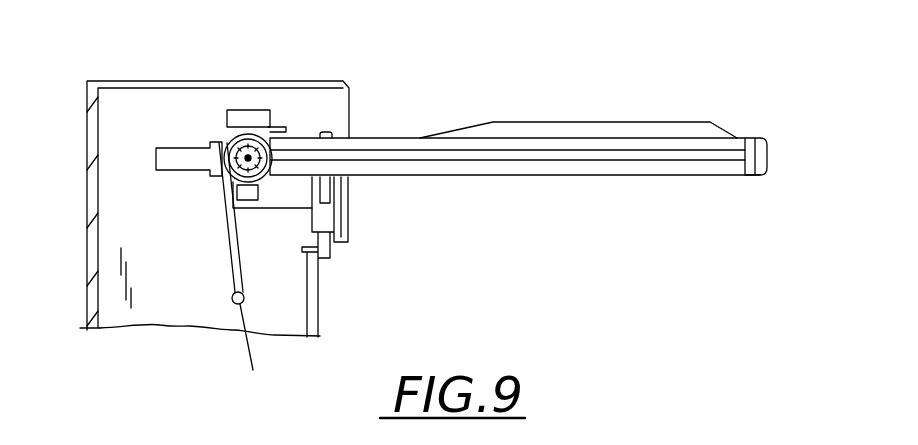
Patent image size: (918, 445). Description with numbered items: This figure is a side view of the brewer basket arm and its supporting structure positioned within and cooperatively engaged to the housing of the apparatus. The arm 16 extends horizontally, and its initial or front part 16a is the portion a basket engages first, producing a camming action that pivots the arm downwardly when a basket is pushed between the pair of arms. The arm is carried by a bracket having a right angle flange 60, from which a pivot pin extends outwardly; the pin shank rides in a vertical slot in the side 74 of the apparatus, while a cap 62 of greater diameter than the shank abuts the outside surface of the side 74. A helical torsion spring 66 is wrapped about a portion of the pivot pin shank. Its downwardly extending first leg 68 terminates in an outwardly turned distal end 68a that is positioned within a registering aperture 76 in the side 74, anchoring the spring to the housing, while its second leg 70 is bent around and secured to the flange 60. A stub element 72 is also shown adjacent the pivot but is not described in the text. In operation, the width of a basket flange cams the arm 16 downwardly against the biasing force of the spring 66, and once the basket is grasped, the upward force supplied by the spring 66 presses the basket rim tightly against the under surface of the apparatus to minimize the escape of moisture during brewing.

The arm 16 is at (770, 150).
The front part of the arm 16a is at (690, 132).
The right angle flange 60 is at (260, 110).
The cap 62 is at (227, 140).
The helical torsion spring 66 is at (237, 110).
The first leg 68 is at (233, 270).
The outwardly turned distal end 68a is at (232, 298).
The second leg 70 is at (280, 127).
The stub shaft 72 is at (180, 163).
The side 74 is at (122, 262).
The aperture 76 is at (252, 355).